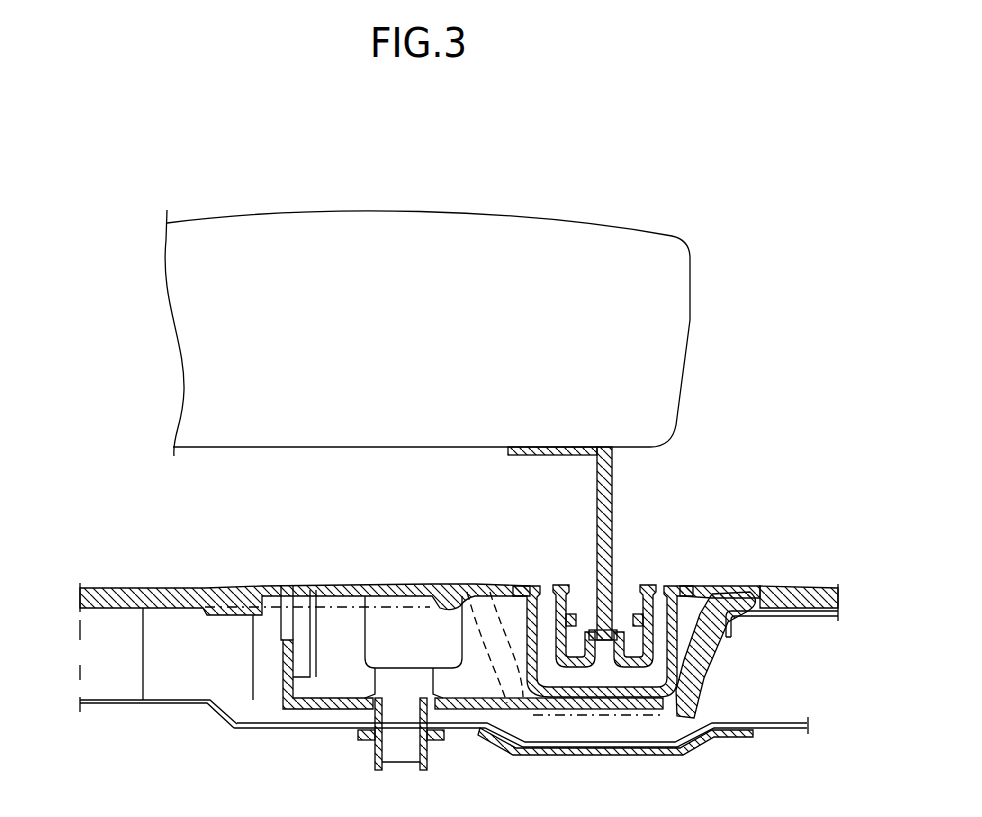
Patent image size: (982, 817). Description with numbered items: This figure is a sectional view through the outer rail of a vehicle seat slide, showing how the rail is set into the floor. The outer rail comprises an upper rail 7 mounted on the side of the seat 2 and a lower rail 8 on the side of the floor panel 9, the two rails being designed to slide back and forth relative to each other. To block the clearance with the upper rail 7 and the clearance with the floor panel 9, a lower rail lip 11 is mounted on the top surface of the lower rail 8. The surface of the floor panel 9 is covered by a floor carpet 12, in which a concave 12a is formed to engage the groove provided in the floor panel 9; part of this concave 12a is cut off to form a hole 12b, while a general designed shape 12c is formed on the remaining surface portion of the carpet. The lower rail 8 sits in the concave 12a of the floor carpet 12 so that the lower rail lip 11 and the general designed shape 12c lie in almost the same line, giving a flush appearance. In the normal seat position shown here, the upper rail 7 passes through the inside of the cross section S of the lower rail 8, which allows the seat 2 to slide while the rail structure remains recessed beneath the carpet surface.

The seat 2 is at (691, 282).
The upper rail 7 is at (612, 513).
The lower rail 8 is at (663, 693).
The floor panel 9 is at (803, 613).
The lower rail lip 11 is at (708, 595).
The floor carpet 12 is at (459, 647).
The concave 12a is at (695, 597).
The hole 12b is at (582, 715).
The general designed shape 12c is at (812, 587).
The cross section S is at (555, 673).